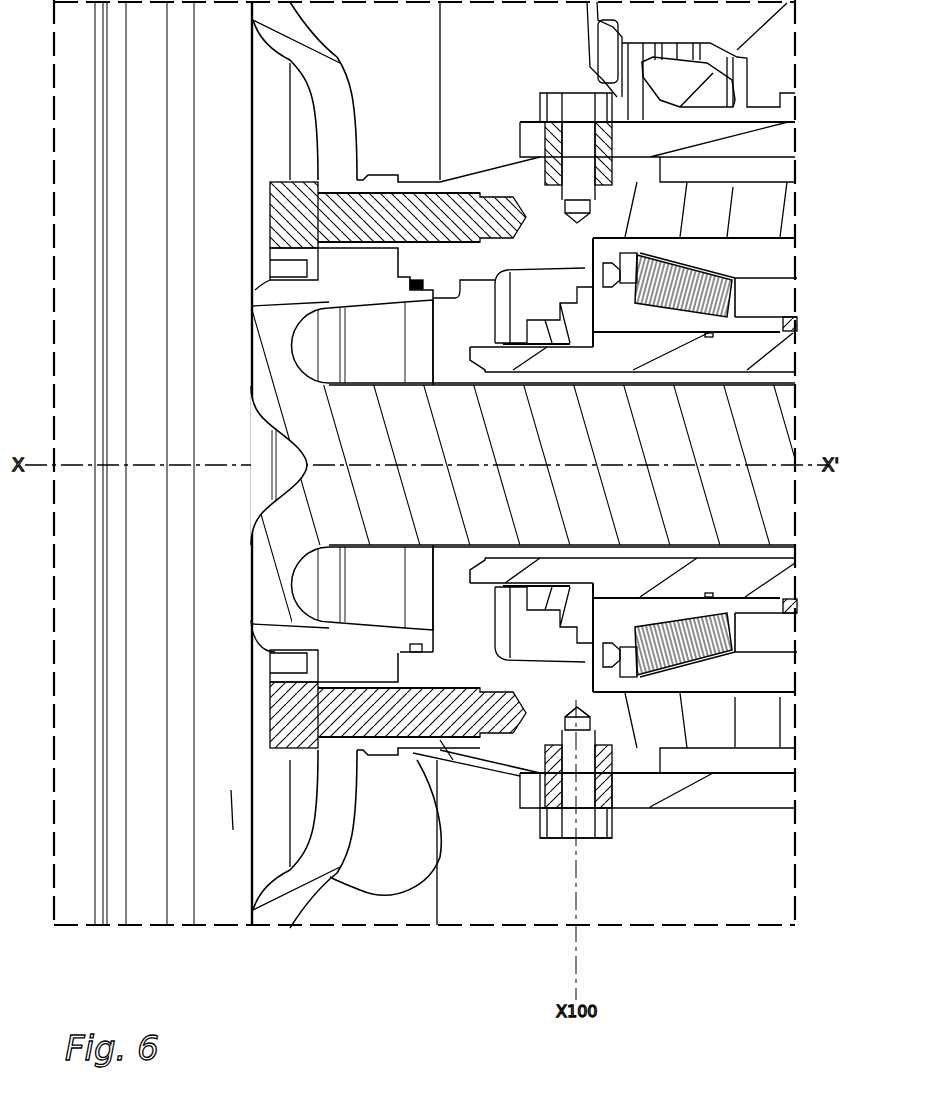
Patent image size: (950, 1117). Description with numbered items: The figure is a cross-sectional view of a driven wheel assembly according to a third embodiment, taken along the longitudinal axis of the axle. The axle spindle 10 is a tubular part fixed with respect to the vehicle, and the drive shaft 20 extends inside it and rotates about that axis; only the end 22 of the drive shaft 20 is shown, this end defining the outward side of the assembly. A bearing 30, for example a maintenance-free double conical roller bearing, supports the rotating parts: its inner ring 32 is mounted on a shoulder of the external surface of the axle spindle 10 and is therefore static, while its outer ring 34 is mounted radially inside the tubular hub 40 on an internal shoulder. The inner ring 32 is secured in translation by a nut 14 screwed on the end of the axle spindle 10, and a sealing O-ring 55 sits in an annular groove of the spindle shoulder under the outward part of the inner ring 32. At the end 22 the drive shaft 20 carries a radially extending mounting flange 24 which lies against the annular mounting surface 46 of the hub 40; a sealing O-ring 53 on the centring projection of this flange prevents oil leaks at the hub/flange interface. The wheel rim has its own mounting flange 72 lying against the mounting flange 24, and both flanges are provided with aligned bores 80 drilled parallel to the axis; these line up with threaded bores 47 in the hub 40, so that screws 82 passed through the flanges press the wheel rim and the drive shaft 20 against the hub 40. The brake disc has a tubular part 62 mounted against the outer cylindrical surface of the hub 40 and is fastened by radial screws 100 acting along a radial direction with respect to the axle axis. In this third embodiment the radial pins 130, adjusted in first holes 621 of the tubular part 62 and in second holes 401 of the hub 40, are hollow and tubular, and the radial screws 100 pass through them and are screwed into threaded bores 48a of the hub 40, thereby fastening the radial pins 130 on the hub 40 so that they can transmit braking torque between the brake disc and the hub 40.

The axle spindle 10 is at (763, 348).
The nut 14 is at (555, 330).
The drive shaft 20 is at (747, 420).
The end 22 is at (273, 560).
The mounting flange 24 is at (383, 183).
The bearing 30 is at (846, 262).
The inner ring 32 is at (790, 322).
The outer ring 34 is at (793, 252).
The hub 40 is at (750, 713).
The mounting surface 46 is at (388, 256).
The bores 47 is at (453, 760).
The threaded bores 48a is at (578, 722).
The sealing O-ring 53 is at (418, 280).
The sealing O-ring 55 is at (710, 590).
The tubular part 62 is at (777, 138).
The mounting flange 72 is at (317, 172).
The bores 80 is at (410, 753).
The screws 82 is at (233, 830).
The radial screws 100 is at (625, 813).
The radial pins 130 is at (613, 780).
The second holes 401 is at (612, 773).
The first holes 621 is at (587, 837).